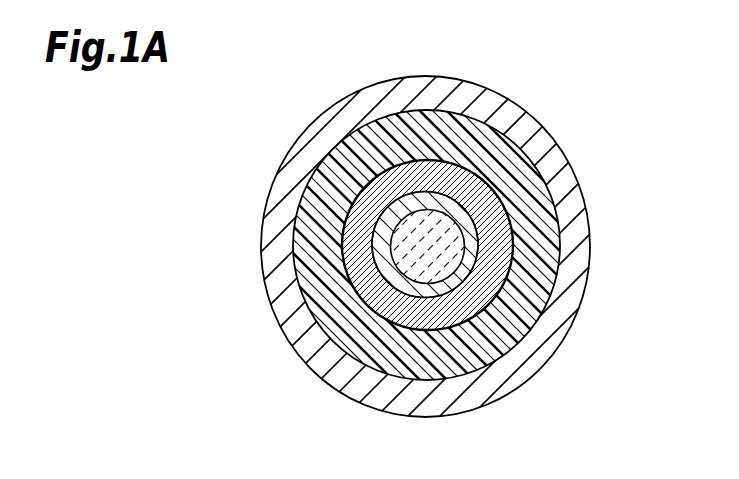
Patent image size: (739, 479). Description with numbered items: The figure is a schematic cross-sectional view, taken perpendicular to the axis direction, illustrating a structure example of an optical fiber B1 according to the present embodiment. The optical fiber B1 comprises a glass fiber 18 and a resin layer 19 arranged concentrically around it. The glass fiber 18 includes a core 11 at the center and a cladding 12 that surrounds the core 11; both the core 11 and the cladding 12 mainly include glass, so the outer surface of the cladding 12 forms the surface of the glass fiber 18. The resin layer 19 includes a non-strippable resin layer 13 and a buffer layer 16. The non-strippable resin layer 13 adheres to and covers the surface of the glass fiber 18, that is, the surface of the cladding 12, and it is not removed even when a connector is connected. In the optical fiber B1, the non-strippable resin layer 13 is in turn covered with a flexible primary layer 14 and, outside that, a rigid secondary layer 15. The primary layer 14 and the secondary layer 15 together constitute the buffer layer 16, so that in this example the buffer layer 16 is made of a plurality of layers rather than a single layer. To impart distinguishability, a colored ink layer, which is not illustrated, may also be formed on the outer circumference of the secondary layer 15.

The optical fiber B1 is at (549, 96).
The core 11 is at (455, 230).
The cladding 12 is at (470, 257).
The non-strippable resin layer 13 is at (352, 204).
The primary layer 14 is at (302, 276).
The secondary layer 15 is at (302, 340).
The buffer layer 16 is at (203, 295).
The glass fiber 18 is at (650, 172).
The resin layer 19 is at (163, 197).